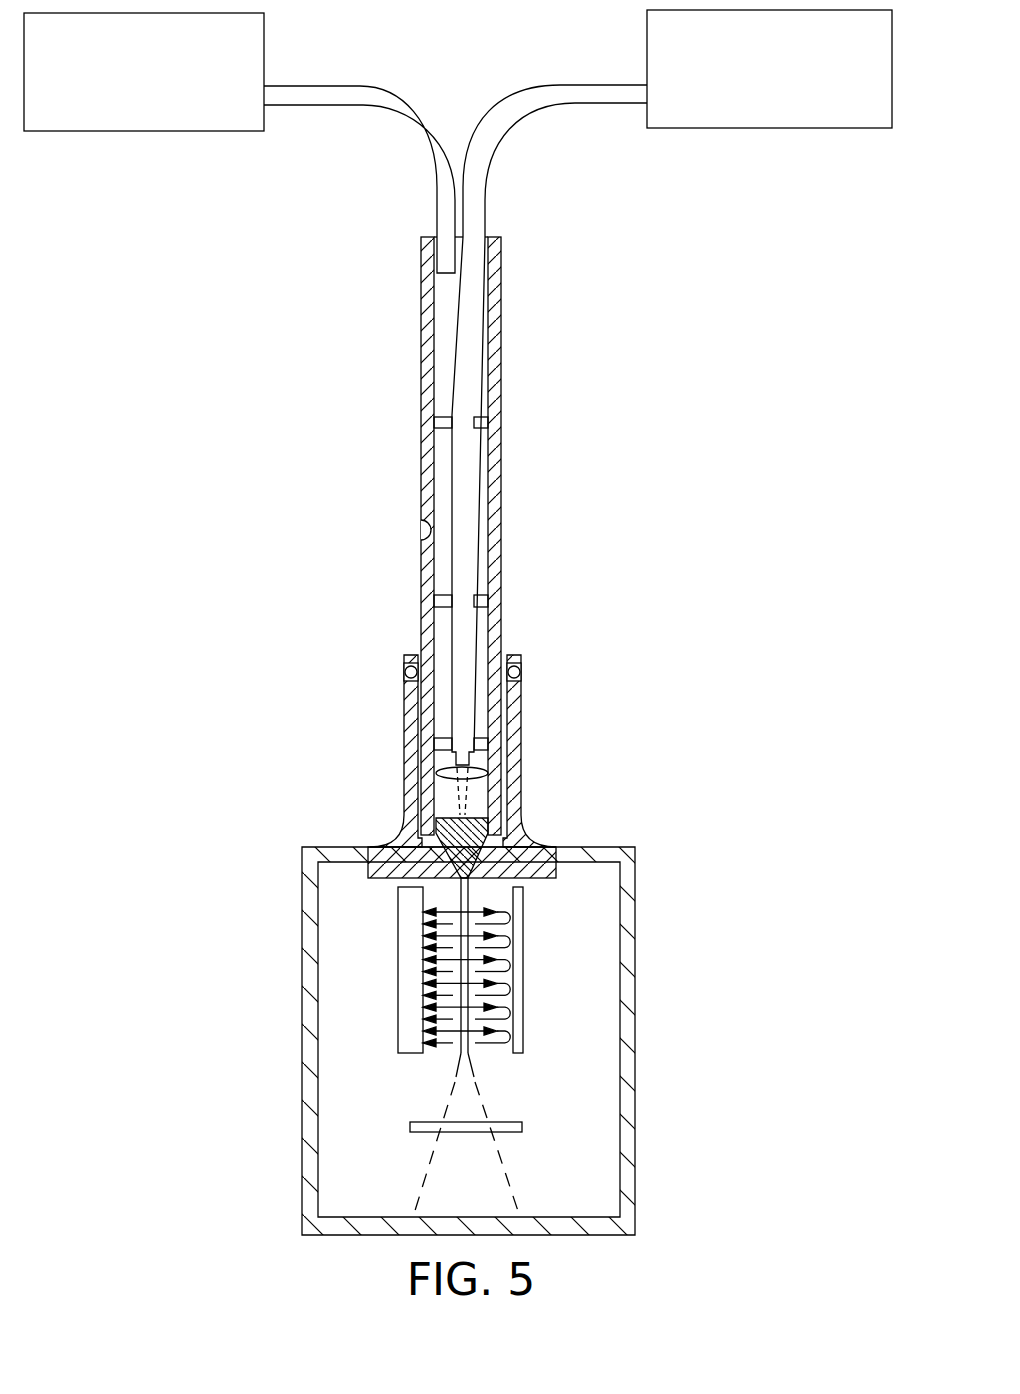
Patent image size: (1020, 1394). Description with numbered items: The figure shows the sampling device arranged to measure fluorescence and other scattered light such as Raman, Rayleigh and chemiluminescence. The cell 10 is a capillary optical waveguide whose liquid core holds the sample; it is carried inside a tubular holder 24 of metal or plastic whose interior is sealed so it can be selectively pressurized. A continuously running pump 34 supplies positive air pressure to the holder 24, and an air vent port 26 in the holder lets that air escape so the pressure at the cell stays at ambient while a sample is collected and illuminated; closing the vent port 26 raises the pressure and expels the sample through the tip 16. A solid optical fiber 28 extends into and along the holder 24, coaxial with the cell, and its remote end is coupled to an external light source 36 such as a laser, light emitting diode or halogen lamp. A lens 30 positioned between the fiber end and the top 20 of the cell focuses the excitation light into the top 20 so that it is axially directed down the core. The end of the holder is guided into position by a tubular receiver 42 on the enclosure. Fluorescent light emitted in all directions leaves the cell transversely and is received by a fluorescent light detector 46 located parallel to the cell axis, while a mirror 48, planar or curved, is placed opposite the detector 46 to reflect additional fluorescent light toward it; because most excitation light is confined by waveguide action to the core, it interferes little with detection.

The cell 10 is at (500, 1070).
The tip 16 is at (460, 1057).
The top or distal end 20 is at (457, 812).
The tubular holder 24 is at (503, 636).
The air vent port 26 is at (420, 536).
The optical fiber 28 is at (497, 135).
The lens 30 is at (480, 781).
The pump 34 is at (127, 105).
The light source 36 is at (752, 102).
The tubular receiver 42 is at (405, 731).
The fluorescent light detector 46 is at (398, 957).
The mirror 48 is at (523, 972).